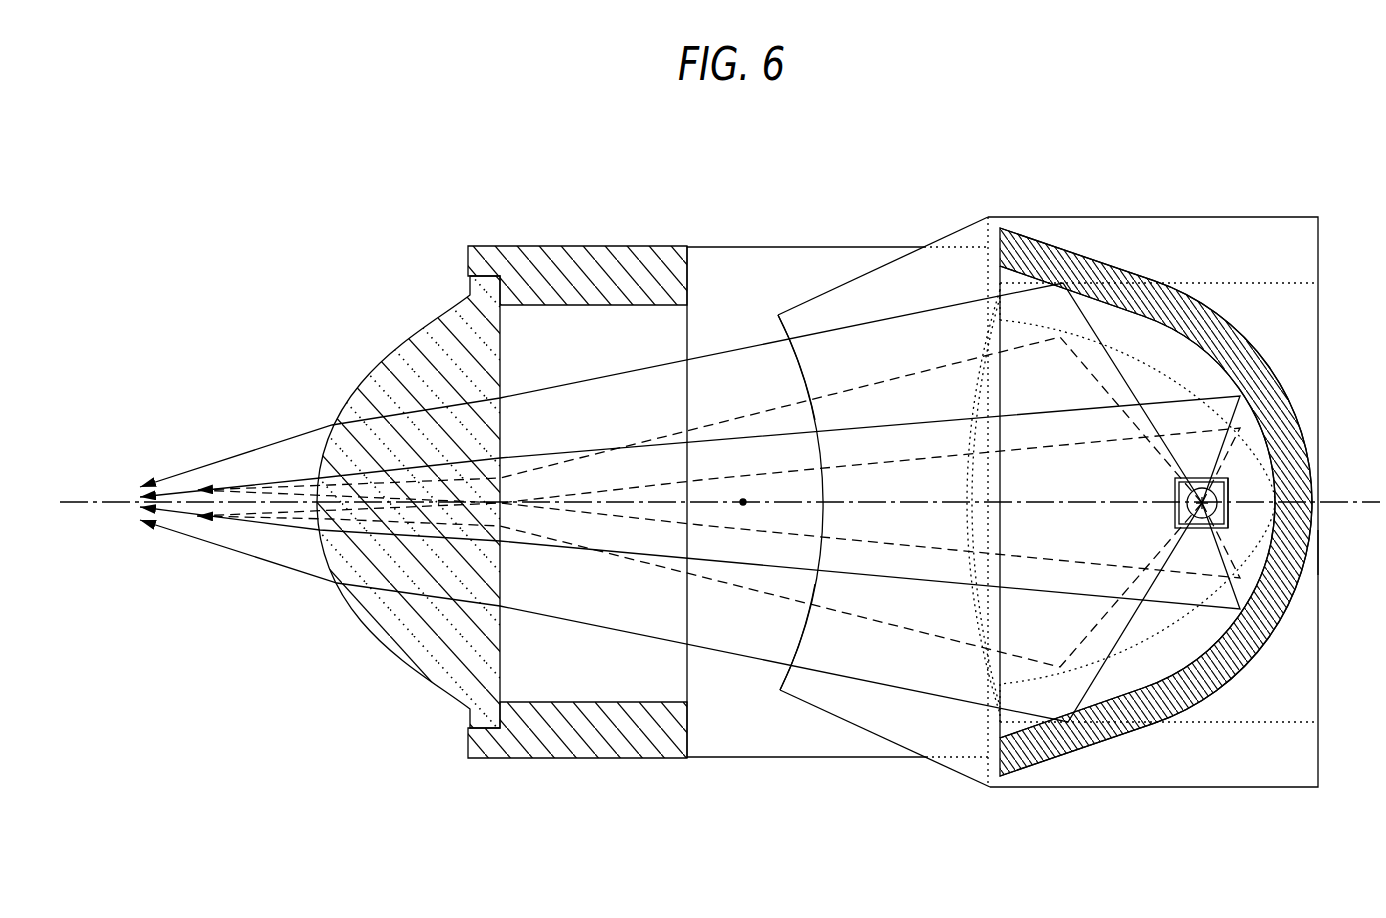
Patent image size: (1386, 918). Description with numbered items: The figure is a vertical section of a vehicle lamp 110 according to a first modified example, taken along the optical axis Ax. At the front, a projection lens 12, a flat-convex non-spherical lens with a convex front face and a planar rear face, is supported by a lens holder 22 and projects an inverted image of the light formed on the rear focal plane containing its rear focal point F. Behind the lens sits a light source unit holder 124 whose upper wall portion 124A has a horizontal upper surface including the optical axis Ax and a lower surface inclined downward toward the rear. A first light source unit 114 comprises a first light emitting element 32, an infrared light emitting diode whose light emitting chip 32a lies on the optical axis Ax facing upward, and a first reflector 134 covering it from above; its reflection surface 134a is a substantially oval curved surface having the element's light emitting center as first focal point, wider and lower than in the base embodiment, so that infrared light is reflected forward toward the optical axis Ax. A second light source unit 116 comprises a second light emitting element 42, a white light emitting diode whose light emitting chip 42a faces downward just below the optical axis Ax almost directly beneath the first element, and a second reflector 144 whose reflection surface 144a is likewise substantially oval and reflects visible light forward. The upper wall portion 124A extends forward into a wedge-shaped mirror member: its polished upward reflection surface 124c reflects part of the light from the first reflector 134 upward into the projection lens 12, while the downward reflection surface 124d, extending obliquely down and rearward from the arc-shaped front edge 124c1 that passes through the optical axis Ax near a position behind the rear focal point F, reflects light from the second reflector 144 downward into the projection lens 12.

The vehicle lamp 110 is at (302, 207).
The projection lens 12 is at (418, 318).
The lens holder 22 is at (523, 243).
The light source unit holder 124 is at (1040, 212).
The upper wall portion 124A is at (905, 745).
The upward reflection surface 124c is at (850, 663).
The front edge of the upward reflection surface 124c1 is at (800, 367).
The downward reflection surface 124d is at (805, 633).
The first light source unit 114 is at (1212, 272).
The first reflector 134 is at (1258, 353).
The reflection surface 134a is at (1117, 305).
The second light source unit 116 is at (1253, 662).
The second reflector 144 is at (968, 397).
The reflection surface 144a is at (1128, 640).
The first light emitting element 32 is at (1237, 473).
The light emitting chip 32a is at (1230, 488).
The second light emitting element 42 is at (1318, 552).
The light emitting chip 42a is at (1266, 512).
The rear focal point F is at (743, 502).
The optical axis Ax is at (80, 497).